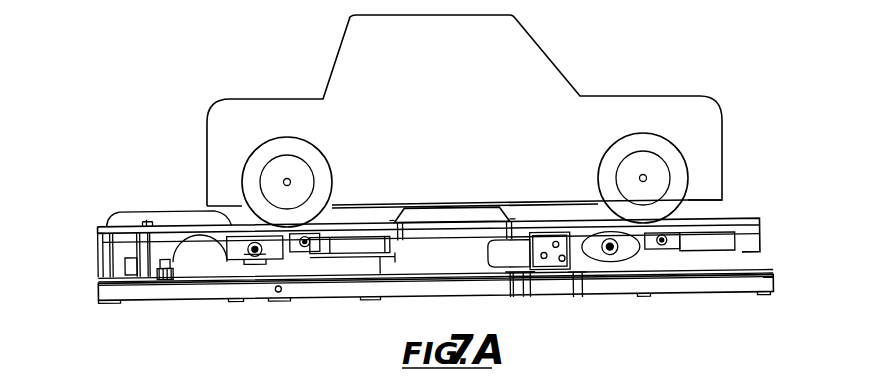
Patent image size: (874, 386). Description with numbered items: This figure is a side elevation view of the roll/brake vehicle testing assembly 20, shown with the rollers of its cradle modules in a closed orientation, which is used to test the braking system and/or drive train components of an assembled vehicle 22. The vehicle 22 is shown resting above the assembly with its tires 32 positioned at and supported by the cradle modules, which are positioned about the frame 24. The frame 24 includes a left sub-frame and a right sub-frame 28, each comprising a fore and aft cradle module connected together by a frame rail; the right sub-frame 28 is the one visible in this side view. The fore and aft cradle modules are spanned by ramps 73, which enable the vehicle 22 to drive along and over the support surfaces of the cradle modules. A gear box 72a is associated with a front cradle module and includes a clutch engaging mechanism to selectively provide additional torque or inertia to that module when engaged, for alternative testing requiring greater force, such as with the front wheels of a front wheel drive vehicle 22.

The roll/brake vehicle testing assembly 20 is at (427, 185).
The vehicle 22 is at (596, 112).
The tires 32 is at (306, 155).
The ramps 73 is at (448, 222).
The frame 24 is at (777, 279).
The right sub-frame 28 is at (135, 291).
The gear box 72a is at (550, 258).